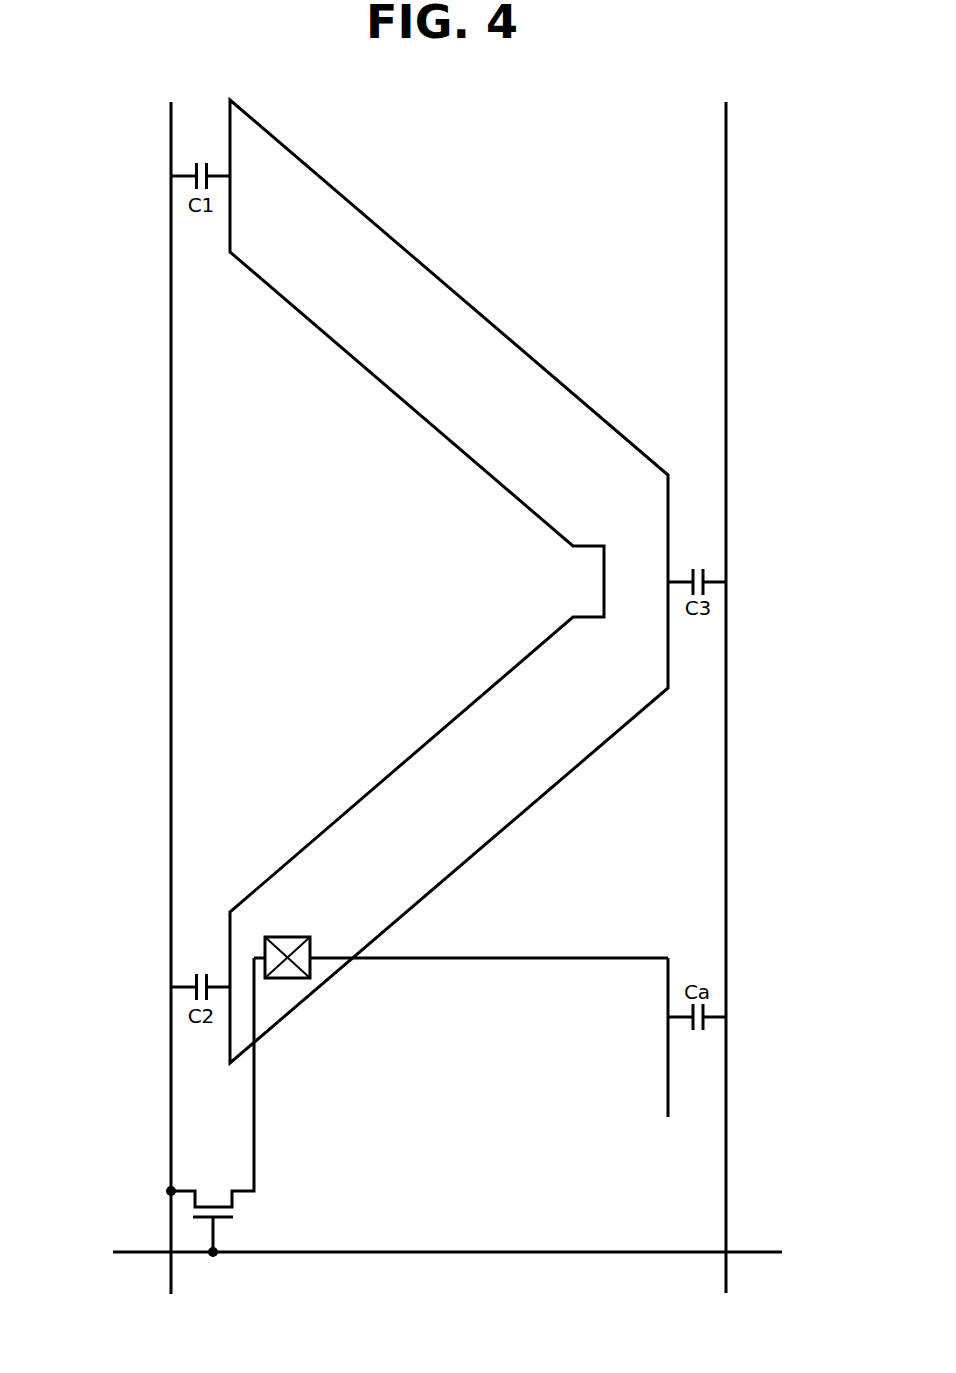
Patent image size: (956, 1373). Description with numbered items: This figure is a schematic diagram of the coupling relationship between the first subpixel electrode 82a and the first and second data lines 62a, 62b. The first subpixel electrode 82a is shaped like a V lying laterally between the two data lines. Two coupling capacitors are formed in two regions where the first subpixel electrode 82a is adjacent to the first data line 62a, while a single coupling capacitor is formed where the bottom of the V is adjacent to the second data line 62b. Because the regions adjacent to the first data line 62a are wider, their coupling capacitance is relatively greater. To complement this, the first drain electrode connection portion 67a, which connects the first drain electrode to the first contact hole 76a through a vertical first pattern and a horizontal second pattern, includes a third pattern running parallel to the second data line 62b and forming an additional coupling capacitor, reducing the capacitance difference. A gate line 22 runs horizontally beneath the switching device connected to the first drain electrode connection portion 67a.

The first data line 62a is at (171, 542).
The second data line 62b is at (726, 426).
The first subpixel electrode 82a is at (490, 320).
The first contact hole 76a is at (287, 937).
The first drain electrode connection portion 67a is at (417, 1082).
The gate line G 22 is at (481, 1255).